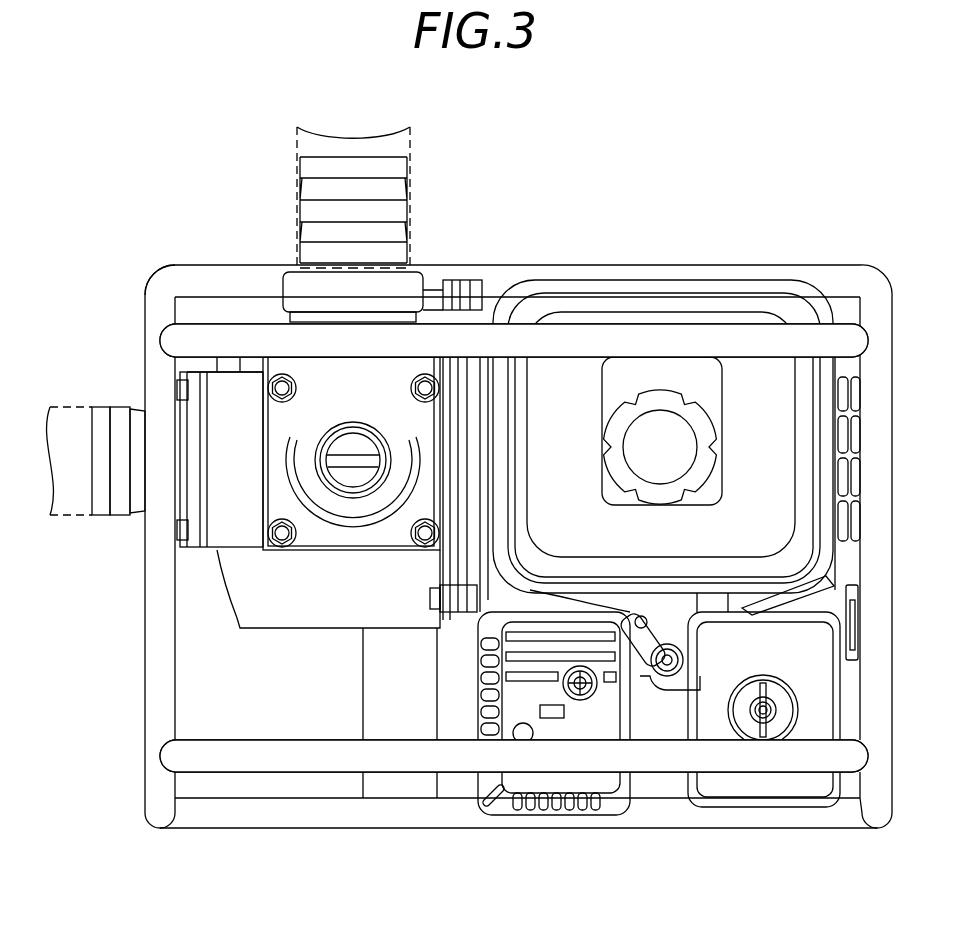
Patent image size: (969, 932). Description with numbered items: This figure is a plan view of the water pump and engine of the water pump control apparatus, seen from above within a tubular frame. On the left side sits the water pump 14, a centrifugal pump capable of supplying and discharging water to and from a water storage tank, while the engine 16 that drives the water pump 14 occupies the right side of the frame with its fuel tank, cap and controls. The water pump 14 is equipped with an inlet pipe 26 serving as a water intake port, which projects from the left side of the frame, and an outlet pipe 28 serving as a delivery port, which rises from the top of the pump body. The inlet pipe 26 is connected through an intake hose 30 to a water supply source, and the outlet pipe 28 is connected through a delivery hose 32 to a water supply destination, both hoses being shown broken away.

The water pump 14 is at (285, 608).
The engine 16 is at (658, 690).
The inlet pipe 26 is at (102, 505).
The outlet pipe 28 is at (400, 171).
The intake hose 30 is at (73, 406).
The delivery hose 32 is at (413, 129).